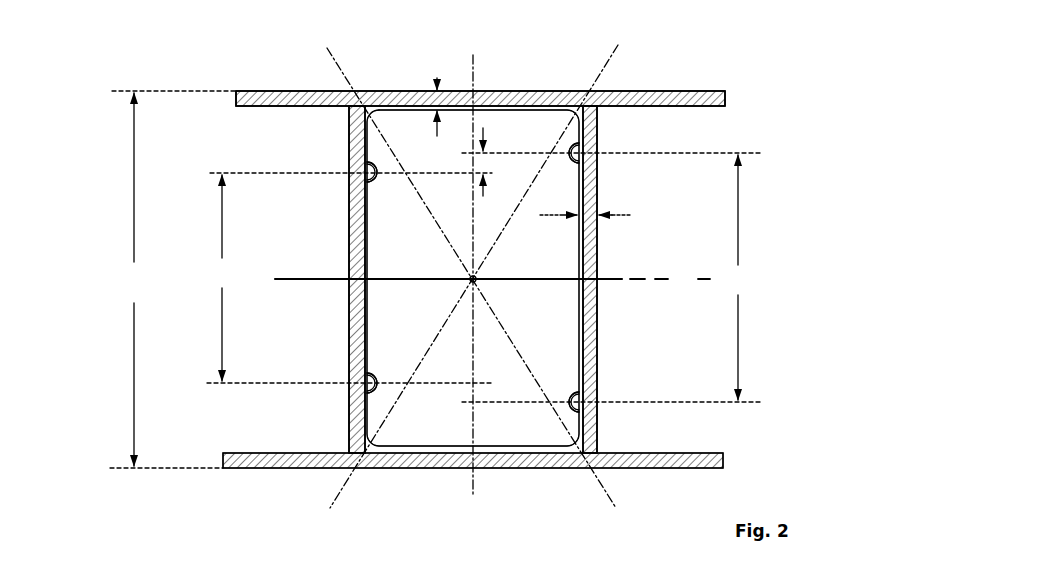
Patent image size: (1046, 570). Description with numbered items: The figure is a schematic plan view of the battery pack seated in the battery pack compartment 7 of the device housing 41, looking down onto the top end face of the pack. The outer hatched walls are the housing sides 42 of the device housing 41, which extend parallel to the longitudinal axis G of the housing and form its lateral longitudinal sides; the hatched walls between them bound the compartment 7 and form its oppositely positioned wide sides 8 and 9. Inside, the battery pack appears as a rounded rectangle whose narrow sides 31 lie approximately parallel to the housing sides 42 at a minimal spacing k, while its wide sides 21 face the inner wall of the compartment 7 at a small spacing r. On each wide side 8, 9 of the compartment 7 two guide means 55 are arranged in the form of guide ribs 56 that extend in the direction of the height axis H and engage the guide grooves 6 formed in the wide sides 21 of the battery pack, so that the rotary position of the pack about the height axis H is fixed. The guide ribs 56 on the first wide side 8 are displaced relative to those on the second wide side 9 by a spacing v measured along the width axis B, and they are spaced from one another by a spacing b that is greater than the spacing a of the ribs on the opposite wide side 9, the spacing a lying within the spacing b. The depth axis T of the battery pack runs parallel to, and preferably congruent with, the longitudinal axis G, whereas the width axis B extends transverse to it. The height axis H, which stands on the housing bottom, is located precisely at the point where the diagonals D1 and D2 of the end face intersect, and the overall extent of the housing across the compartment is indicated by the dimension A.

The guide groove 6 is at (376, 180).
The battery pack compartment 7 is at (373, 104).
The first wide side 8 is at (581, 313).
The second wide side 9 is at (384, 243).
The wide side 21 is at (366, 311).
The narrow side 31 is at (402, 109).
The device housing 41 is at (450, 91).
The housing side 42 is at (531, 91).
The guide means 55 is at (357, 130).
The guide rib 56 is at (368, 171).
The overall height A is at (133, 279).
The spacing a is at (221, 278).
The spacing b is at (737, 277).
The width axis B is at (475, 89).
The diagonal D1 is at (488, 266).
The diagonal D2 is at (463, 266).
The longitudinal axis G is at (492, 282).
The height axis H is at (477, 278).
The depth axis T is at (621, 279).
The spacing k is at (427, 111).
The spacing v is at (493, 159).
The spacing r is at (586, 203).